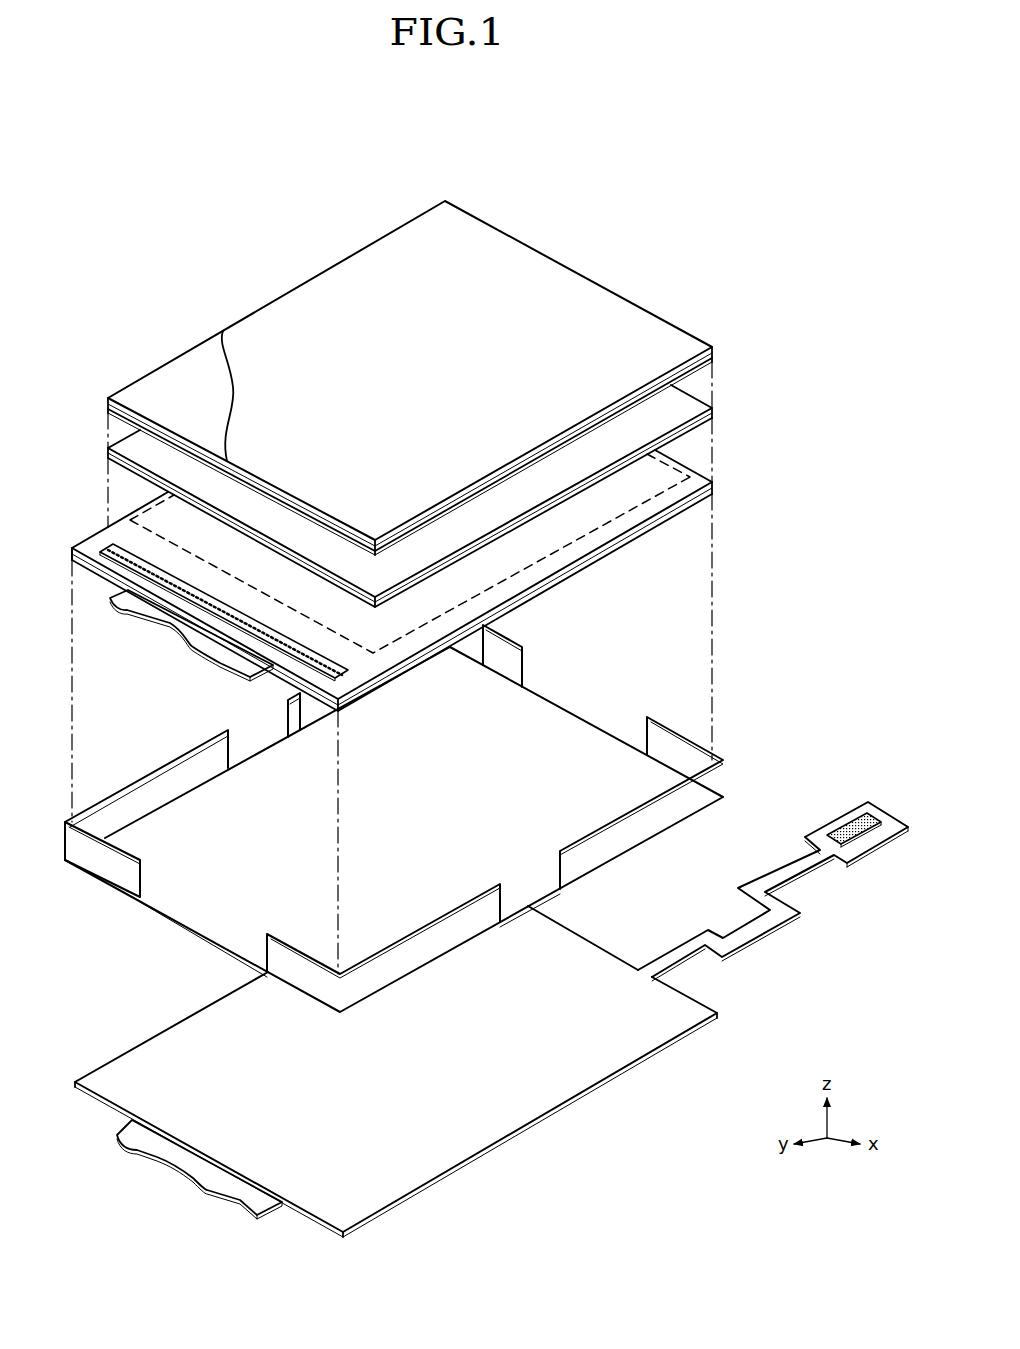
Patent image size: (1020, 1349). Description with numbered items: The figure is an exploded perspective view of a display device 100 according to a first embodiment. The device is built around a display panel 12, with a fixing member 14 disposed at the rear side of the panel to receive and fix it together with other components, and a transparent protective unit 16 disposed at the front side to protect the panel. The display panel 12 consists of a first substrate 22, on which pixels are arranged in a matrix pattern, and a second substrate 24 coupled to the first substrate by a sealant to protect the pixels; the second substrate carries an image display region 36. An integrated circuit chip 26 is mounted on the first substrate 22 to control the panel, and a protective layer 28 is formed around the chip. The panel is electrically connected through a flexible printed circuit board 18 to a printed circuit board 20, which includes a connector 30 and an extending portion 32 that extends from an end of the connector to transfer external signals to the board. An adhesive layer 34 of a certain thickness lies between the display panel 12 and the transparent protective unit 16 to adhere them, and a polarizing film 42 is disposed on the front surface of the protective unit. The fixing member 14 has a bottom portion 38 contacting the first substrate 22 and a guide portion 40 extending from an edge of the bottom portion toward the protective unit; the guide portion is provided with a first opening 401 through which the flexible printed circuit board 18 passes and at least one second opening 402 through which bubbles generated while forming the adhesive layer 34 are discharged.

The display device 100 is at (358, 164).
The display panel 12 is at (593, 574).
The fixing member 14 is at (198, 943).
The transparent protective unit 16 is at (410, 378).
The flexible printed circuit board 18 is at (165, 613).
The printed circuit board 20 is at (556, 1106).
The first substrate 22 is at (702, 505).
The second substrate 24 is at (443, 484).
The integrated circuit chip 26 is at (106, 548).
The protective layer 28 is at (88, 546).
The connector 30 is at (856, 829).
The extending portion 32 is at (796, 906).
The adhesive layer 34 is at (700, 387).
The image display region 36 is at (612, 538).
The bottom portion 38 is at (595, 735).
The guide portion 40 is at (672, 812).
The first opening 401 is at (145, 882).
The second opening 402 is at (286, 712).
The polarizing film 42 is at (538, 263).